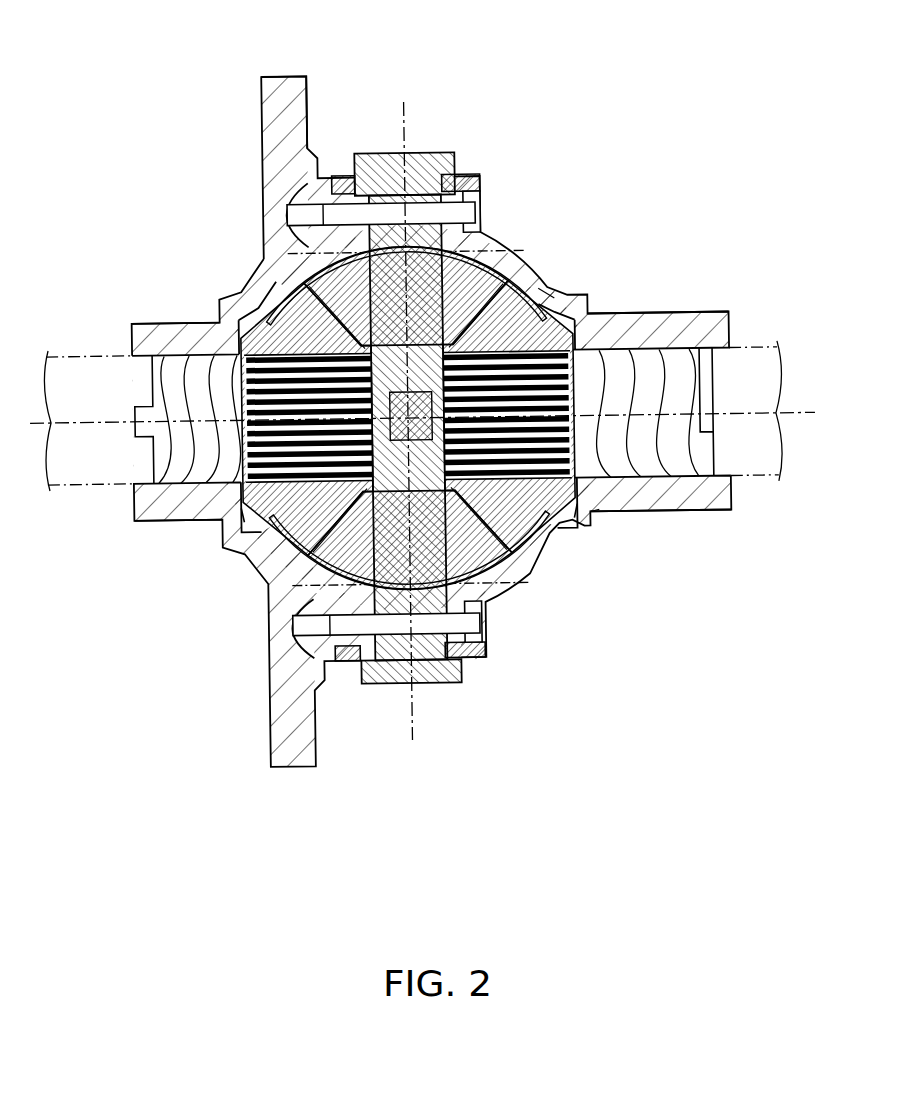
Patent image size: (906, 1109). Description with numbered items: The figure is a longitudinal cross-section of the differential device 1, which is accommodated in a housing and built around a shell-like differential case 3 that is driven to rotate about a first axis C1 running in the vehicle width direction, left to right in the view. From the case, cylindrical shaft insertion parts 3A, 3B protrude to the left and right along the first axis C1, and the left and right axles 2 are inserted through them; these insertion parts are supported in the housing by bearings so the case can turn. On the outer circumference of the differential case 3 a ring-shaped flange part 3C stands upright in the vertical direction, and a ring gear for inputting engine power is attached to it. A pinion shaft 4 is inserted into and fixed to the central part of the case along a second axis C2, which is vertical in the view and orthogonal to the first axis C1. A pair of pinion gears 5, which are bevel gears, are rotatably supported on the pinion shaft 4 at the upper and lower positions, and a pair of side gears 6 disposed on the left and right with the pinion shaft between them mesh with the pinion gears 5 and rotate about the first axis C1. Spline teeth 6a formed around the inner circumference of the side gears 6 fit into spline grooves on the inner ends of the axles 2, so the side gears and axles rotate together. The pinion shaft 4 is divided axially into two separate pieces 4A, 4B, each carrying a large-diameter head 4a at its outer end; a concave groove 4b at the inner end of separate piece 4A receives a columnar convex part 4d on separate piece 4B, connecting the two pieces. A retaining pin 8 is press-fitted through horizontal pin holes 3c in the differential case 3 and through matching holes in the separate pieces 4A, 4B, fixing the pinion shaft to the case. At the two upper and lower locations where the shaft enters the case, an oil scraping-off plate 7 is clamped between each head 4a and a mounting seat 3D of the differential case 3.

The differential device 1 is at (583, 45).
The axles 2 is at (768, 490).
The differential case 3 is at (540, 300).
The shaft insertion part 3A is at (170, 320).
The shaft insertion part 3B is at (688, 316).
The flange part 3C is at (311, 82).
The mounting seat 3D is at (350, 661).
The pin holes 3c is at (275, 641).
The pinion shaft 4 is at (482, 235).
The separate piece 4A is at (292, 250).
The separate piece 4B is at (275, 606).
The head 4a is at (456, 685).
The concave groove 4b is at (545, 297).
The convex part 4d is at (600, 519).
The pinion gears 5 is at (517, 590).
The side gears 6 is at (568, 548).
The spline teeth 6a is at (240, 530).
The oil scraping-off plate 7 is at (486, 665).
The retaining pin 8 is at (385, 680).
The first axis C1 is at (438, 406).
The second axis C2 is at (405, 406).